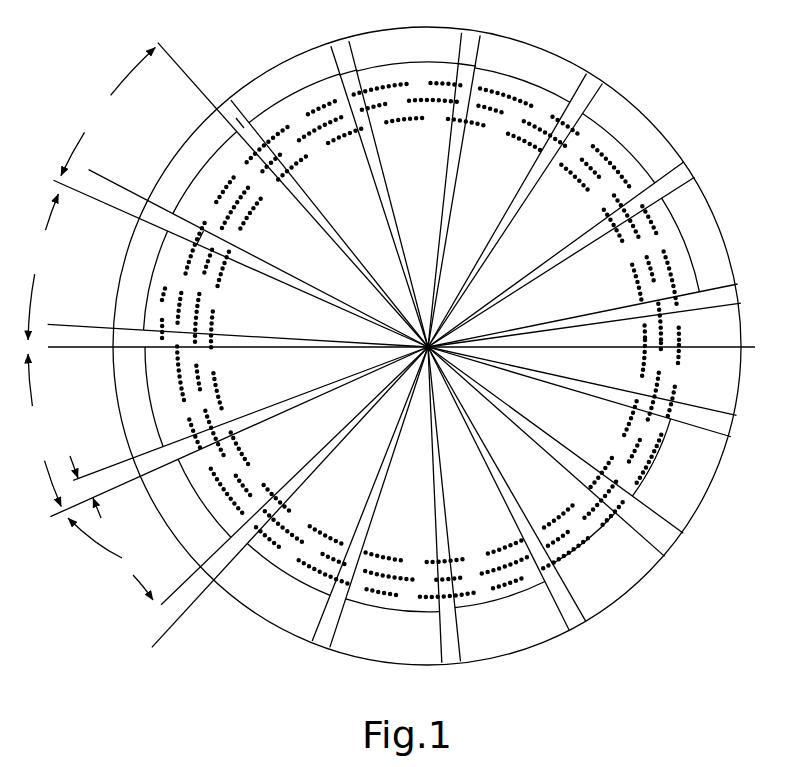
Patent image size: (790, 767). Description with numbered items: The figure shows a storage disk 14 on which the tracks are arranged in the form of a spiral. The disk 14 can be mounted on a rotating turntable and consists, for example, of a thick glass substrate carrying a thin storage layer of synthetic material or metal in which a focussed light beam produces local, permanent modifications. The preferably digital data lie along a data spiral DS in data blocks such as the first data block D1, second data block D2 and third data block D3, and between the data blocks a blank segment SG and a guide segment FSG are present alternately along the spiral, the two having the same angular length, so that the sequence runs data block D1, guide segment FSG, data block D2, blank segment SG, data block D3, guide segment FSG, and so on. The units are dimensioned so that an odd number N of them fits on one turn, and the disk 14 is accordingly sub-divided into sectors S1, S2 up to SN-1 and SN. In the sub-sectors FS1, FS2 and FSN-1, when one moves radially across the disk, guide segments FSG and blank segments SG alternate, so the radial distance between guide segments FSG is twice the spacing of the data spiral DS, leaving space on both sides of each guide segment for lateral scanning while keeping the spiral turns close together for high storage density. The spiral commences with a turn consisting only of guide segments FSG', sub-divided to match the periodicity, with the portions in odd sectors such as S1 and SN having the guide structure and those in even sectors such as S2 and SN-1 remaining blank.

The storage disk 14 is at (395, 346).
The first sector S1 is at (43, 267).
The second sector S2 is at (108, 111).
The N-th sector SN is at (43, 430).
The (N-1)-th sector SN-1 is at (110, 559).
The first sub-sector FS1 is at (57, 300).
The second sub-sector FS2 is at (108, 150).
The (N-1)-th sub-sector FSN-1 is at (138, 626).
The guide segment FSG is at (309, 142).
The guide segment of the first turn FSG' is at (383, 310).
The blank segment SG is at (240, 130).
The data spiral DS is at (224, 178).
The first data block D1 is at (428, 340).
The second data block D2 is at (428, 340).
The third data block D3 is at (428, 340).